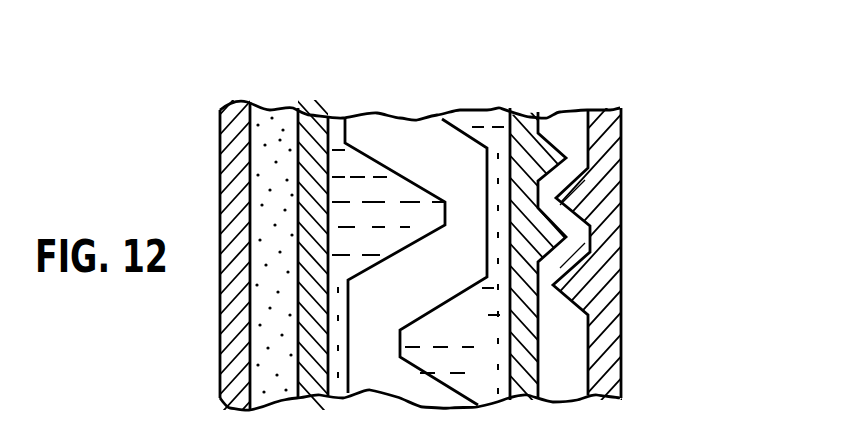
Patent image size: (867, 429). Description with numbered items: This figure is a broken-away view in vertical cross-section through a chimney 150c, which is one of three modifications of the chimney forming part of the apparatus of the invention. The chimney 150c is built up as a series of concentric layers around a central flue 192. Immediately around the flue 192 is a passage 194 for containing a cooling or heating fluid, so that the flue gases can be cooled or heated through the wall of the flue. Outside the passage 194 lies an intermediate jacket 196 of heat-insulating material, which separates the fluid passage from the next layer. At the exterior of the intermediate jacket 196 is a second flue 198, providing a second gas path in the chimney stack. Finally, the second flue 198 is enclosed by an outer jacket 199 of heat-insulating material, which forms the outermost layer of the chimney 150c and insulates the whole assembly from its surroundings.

The chimney 150c is at (655, 196).
The flue 192 is at (453, 153).
The passage 194 is at (363, 187).
The intermediate jacket 196 is at (510, 290).
The second flue 198 is at (570, 362).
The outer jacket 199 is at (592, 294).